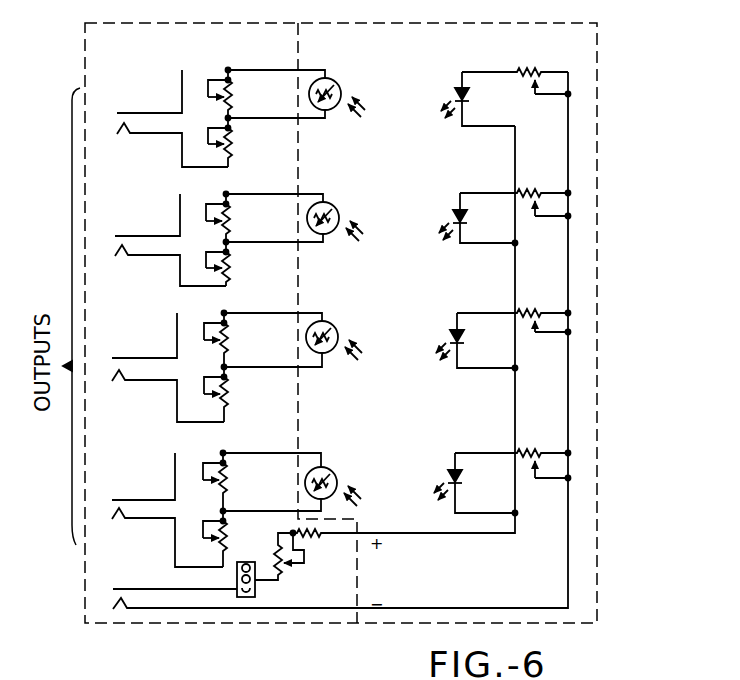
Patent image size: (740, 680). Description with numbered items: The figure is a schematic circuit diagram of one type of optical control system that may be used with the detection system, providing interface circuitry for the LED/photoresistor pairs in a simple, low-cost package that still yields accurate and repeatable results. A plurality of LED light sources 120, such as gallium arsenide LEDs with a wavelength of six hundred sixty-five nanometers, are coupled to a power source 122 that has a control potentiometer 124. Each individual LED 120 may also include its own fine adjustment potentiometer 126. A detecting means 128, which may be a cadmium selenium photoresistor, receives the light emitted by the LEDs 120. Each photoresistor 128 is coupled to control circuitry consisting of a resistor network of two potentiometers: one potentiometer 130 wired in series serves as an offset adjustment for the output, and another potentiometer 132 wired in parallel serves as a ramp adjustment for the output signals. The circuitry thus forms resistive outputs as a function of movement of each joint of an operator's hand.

The LED light source 120 is at (457, 86).
The power source 122 is at (120, 629).
The control potentiometer 124 is at (293, 577).
The fine adjustment potentiometer 126 is at (537, 59).
The detecting means 128 is at (336, 80).
The series potentiometer 130 is at (243, 135).
The parallel potentiometer 132 is at (284, 50).